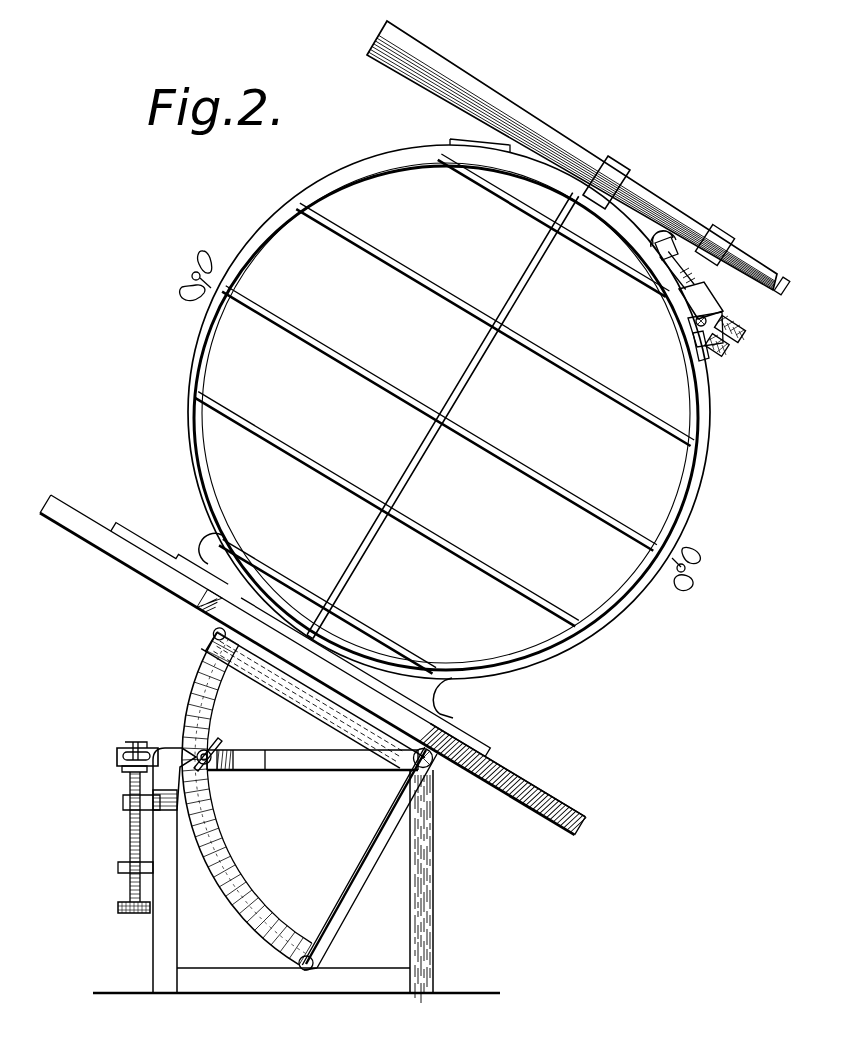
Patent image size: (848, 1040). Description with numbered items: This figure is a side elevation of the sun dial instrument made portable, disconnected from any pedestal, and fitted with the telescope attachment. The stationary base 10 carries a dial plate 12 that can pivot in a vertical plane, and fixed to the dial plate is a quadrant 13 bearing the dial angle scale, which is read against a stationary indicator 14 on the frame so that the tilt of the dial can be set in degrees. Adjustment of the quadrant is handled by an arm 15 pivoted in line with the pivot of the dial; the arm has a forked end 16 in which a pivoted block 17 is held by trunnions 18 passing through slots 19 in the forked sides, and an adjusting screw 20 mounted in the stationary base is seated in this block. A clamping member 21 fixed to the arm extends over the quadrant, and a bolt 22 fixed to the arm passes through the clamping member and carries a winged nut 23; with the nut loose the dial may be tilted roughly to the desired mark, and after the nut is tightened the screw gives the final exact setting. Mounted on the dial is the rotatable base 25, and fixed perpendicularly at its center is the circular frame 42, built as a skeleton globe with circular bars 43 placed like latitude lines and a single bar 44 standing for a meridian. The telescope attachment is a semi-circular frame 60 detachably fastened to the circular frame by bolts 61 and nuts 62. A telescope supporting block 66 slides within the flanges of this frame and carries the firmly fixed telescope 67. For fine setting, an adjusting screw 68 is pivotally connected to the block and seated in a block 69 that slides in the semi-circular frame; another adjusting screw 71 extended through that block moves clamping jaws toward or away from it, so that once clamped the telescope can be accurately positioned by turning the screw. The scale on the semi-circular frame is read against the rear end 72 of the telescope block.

The stationary base 10 is at (432, 860).
The dial plate 12 is at (576, 819).
The quadrant 13 is at (331, 703).
The stationary indicator 14 is at (173, 754).
The arm 15 is at (318, 757).
The forked end 16 is at (126, 771).
The pivoted block 17 is at (127, 743).
The trunnions 18 is at (135, 741).
The slots 19 is at (124, 756).
The adjusting screw 20 is at (130, 847).
The clamping member 21 is at (257, 748).
The bolt 22 is at (214, 765).
The winged nut 23 is at (220, 737).
The rotatable base 25 is at (500, 750).
The circular frame 42 is at (613, 624).
The circular bars 43 is at (557, 490).
The circular bar representing a meridian line 44 is at (427, 462).
The semi-circular frame 60 is at (702, 490).
The bolts 61 is at (194, 275).
The nuts 62 is at (203, 257).
The telescope supporting block 66 is at (632, 225).
The telescope 67 is at (606, 162).
The adjusting screw 68 is at (728, 326).
The block 69 is at (706, 296).
The adjusting screw 71 is at (718, 348).
The rear end of the telescope frame 72 is at (690, 236).